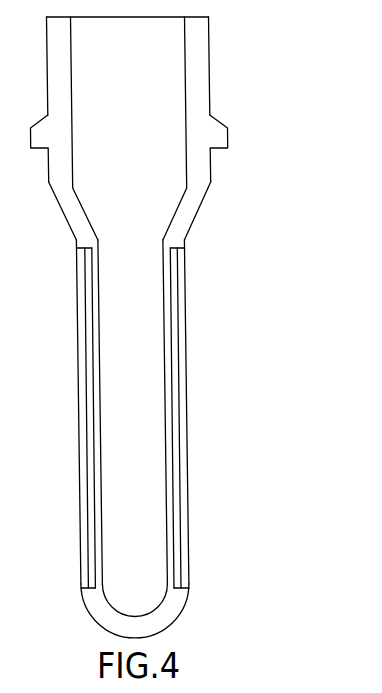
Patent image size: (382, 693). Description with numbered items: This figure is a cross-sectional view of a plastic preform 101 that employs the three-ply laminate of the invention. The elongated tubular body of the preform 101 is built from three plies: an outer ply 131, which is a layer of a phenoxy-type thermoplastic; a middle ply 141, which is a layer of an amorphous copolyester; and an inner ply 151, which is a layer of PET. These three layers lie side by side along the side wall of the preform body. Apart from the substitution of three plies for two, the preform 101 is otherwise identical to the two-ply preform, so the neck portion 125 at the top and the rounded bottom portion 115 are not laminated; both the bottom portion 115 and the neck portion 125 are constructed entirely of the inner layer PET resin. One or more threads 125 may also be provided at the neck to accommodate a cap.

The preform 101 is at (233, 63).
The neck portion 125 is at (221, 128).
The outer ply 131 is at (183, 435).
The middle ply 141 is at (173, 380).
The inner ply 151 is at (167, 337).
The bottom portion 115 is at (152, 636).